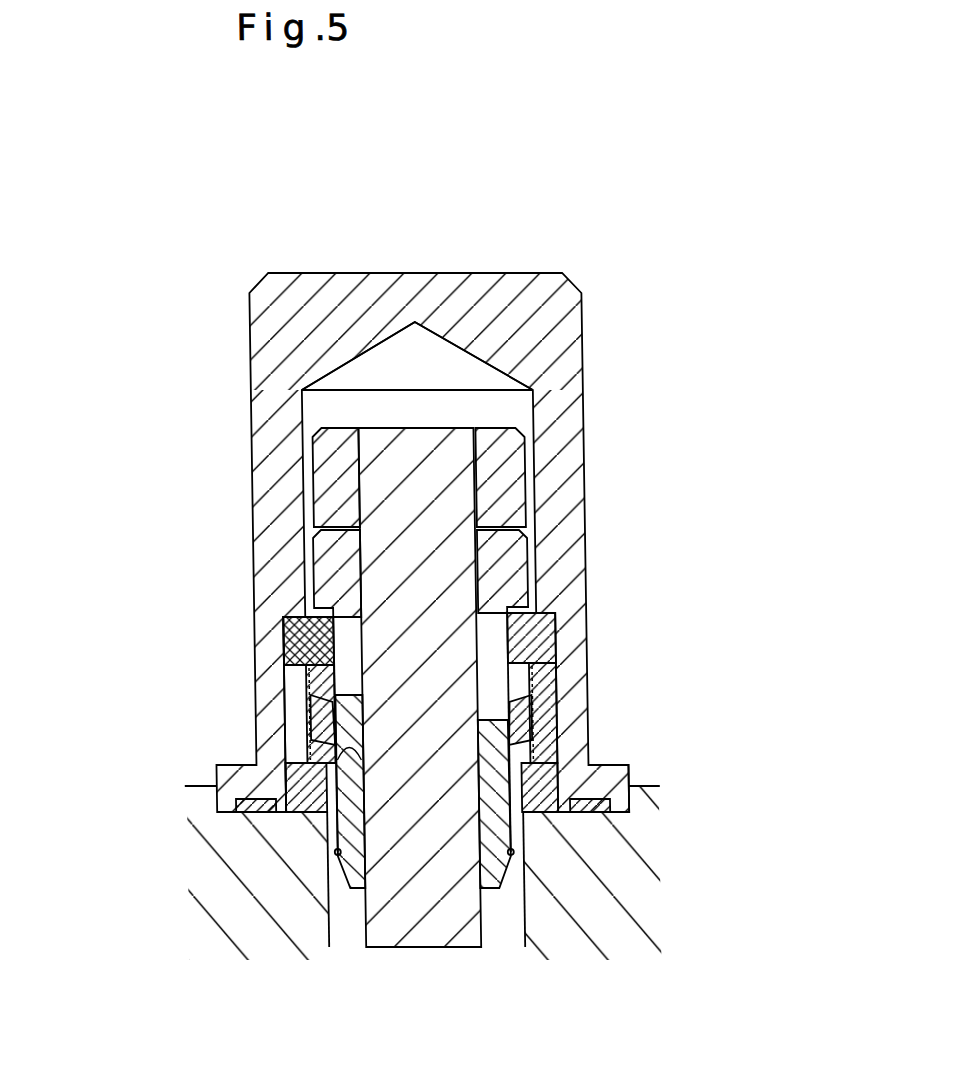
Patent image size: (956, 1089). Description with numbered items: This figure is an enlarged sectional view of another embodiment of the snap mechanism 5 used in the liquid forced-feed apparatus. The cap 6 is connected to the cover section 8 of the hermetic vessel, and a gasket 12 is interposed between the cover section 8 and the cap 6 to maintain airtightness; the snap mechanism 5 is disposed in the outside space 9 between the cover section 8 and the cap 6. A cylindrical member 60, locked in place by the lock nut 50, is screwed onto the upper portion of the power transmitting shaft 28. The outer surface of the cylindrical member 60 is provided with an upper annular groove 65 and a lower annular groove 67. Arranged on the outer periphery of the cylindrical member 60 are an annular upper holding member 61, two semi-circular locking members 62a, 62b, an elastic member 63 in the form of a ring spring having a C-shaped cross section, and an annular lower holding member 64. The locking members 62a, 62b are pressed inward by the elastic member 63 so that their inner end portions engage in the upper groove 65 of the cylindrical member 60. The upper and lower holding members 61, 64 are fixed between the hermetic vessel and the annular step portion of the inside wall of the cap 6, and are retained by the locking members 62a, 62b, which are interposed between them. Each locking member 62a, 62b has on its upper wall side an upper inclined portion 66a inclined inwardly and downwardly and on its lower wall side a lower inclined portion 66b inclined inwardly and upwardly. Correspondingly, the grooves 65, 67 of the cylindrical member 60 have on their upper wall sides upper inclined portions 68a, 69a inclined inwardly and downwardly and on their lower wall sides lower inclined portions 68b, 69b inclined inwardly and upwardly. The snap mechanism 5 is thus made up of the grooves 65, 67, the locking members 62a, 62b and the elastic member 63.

The snap mechanism 5 is at (606, 385).
The cap 6 is at (374, 292).
The outside space 9 is at (456, 370).
The gasket 12 is at (177, 847).
The cover section 8 is at (626, 915).
The power transmitting shaft 28 is at (433, 462).
The lock nut 50 is at (315, 468).
The cylindrical member 60 is at (497, 557).
The annular upper holding member 61 is at (291, 618).
The semi-circular locking member 62a is at (296, 713).
The semi-circular locking member 62b is at (522, 703).
The elastic member 63 is at (296, 733).
The annular lower holding member 64 is at (618, 793).
The upper annular groove 65 is at (278, 640).
The upper inclined portion 66a is at (274, 625).
The lower inclined portion 66b is at (295, 767).
The lower annular groove 67 is at (354, 742).
The upper inclined portion 68a is at (505, 640).
The lower inclined portion 68b is at (469, 767).
The upper inclined portion 69a is at (332, 742).
The lower inclined portion 69b is at (324, 760).